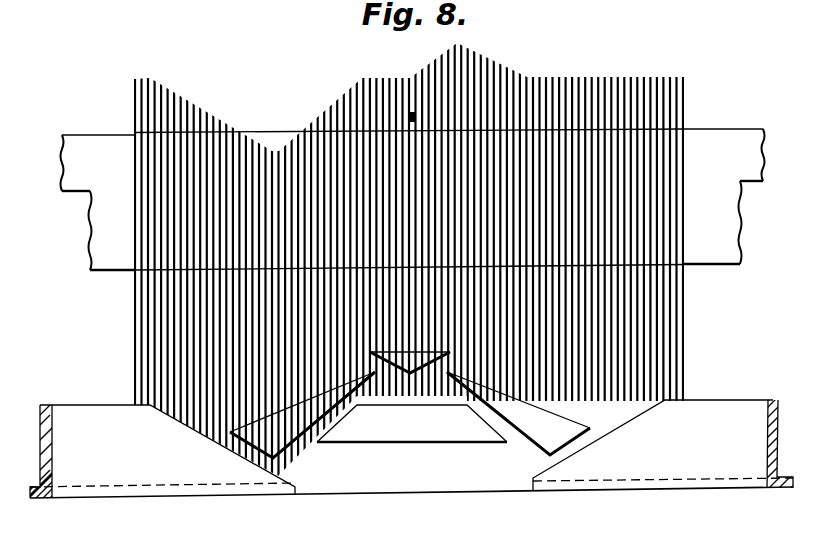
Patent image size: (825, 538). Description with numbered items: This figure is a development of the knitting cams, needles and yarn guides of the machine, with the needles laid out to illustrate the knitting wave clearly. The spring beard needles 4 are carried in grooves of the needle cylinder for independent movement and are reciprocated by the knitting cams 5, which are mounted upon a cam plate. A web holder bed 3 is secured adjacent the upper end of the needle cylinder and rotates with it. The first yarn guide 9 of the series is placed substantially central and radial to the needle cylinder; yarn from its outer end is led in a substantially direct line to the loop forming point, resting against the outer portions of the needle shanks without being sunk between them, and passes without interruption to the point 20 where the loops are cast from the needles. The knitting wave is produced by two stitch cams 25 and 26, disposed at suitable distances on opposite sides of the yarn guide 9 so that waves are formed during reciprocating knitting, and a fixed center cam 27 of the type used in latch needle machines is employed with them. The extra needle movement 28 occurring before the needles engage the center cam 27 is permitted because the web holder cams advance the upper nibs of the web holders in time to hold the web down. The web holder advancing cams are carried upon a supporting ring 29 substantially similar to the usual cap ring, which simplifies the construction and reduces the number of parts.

The web holder bed 3 is at (113, 258).
The spring beard needles 4 is at (134, 346).
The knitting cams 5 is at (362, 449).
The first yarn guide 9 is at (416, 117).
The loop casting point 20 is at (274, 151).
The stitch cam 25 is at (293, 447).
The stitch cam 26 is at (540, 432).
The fixed center cam 27 is at (410, 375).
The extra needle movement 28 is at (467, 57).
The supporting ring 29 is at (87, 142).